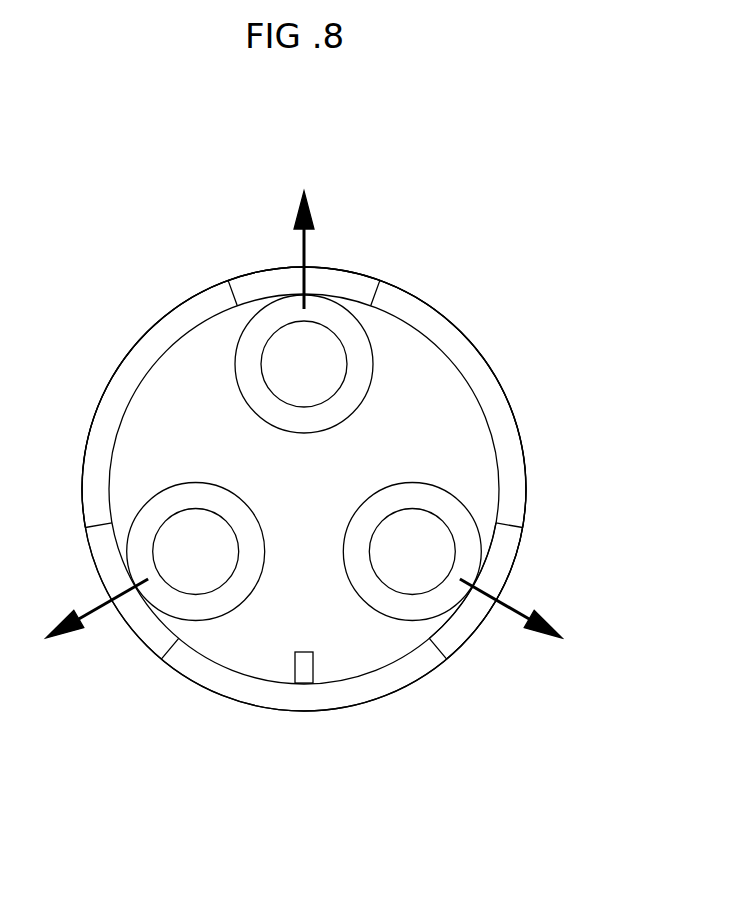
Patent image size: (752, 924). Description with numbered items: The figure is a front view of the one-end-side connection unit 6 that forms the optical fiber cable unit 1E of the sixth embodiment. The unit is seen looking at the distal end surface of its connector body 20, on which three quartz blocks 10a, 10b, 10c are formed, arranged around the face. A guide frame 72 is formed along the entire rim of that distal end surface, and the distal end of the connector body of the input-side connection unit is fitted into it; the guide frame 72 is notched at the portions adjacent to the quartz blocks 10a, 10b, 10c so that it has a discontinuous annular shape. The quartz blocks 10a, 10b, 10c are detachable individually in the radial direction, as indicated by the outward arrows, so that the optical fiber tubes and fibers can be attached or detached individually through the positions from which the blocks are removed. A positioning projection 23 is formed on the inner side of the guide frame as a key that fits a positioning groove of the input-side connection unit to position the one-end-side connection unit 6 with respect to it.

The optical fiber cable unit 1E is at (505, 188).
The one-end-side connection unit 6 is at (415, 283).
The guide frame 72 is at (146, 357).
The connector body 20 is at (512, 572).
The quartz block 10a is at (287, 310).
The quartz block 10b is at (440, 603).
The quartz block 10c is at (157, 592).
The positioning projection 23 is at (302, 663).